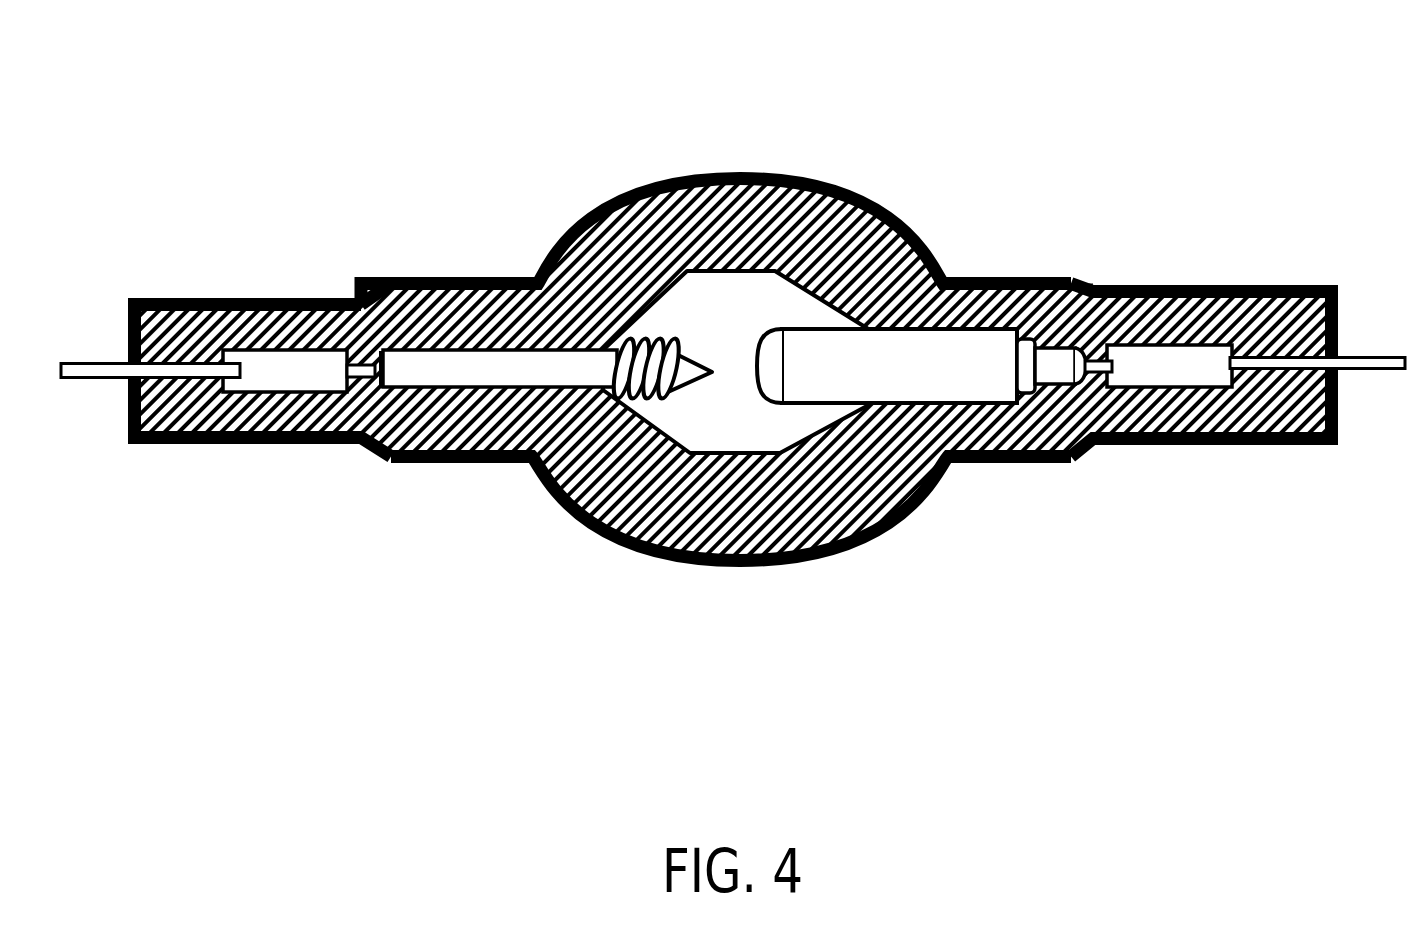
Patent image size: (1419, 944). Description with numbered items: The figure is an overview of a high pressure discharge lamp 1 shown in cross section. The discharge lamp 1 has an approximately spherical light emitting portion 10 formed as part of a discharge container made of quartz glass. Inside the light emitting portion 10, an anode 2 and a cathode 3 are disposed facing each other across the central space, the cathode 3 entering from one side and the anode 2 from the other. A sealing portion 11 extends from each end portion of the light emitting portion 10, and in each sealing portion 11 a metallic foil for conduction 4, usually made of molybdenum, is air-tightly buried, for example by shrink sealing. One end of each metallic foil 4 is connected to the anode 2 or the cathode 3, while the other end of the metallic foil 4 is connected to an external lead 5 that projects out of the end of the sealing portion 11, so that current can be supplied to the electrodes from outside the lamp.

The discharge lamp 1 is at (733, 374).
The anode 2 is at (993, 356).
The cathode 3 is at (441, 368).
The metallic foil for conduction 4 is at (256, 370).
The external lead 5 is at (72, 352).
The light emitting portion 10 is at (731, 450).
The sealing portion 11 is at (1141, 457).